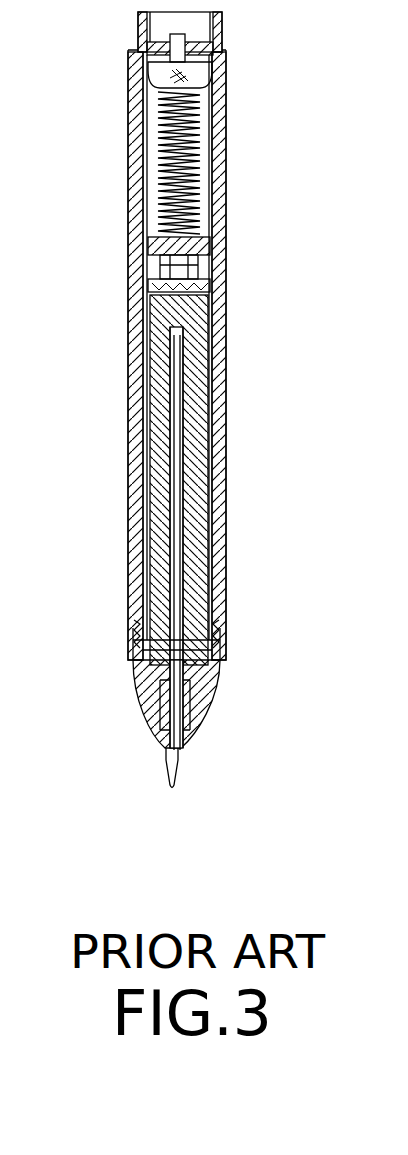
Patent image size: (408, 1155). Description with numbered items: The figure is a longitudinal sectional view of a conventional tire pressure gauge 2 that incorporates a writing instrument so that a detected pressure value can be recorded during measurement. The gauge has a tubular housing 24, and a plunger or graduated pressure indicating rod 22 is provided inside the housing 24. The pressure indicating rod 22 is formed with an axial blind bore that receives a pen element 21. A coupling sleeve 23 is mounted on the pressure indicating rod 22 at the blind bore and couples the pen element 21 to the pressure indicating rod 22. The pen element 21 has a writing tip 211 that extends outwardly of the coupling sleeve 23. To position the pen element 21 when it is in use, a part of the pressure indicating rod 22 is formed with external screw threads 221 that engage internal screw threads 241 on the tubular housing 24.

The tire pressure gauge 2 is at (240, 170).
The pen element 21 is at (178, 516).
The writing tip 211 is at (165, 772).
The pressure indicating rod 22 is at (155, 420).
The external screw threads 221 is at (138, 625).
The coupling sleeve 23 is at (142, 738).
The tubular housing 24 is at (135, 210).
The internal screw threads 241 is at (140, 660).